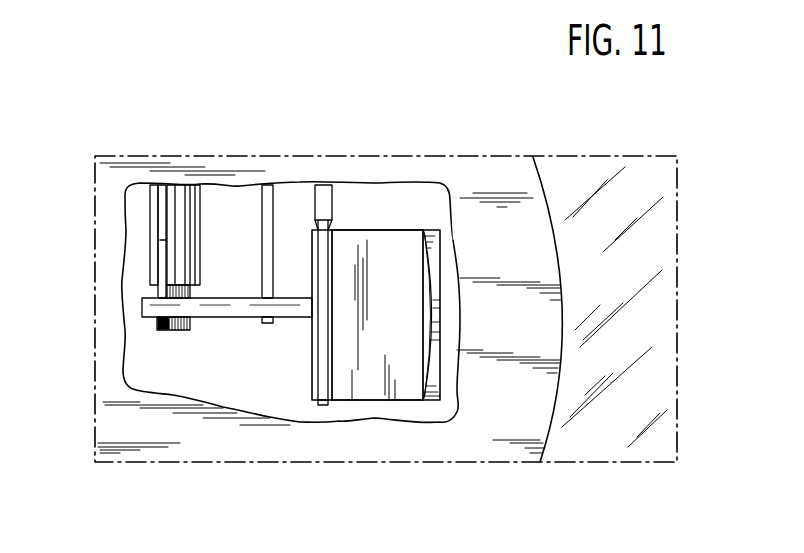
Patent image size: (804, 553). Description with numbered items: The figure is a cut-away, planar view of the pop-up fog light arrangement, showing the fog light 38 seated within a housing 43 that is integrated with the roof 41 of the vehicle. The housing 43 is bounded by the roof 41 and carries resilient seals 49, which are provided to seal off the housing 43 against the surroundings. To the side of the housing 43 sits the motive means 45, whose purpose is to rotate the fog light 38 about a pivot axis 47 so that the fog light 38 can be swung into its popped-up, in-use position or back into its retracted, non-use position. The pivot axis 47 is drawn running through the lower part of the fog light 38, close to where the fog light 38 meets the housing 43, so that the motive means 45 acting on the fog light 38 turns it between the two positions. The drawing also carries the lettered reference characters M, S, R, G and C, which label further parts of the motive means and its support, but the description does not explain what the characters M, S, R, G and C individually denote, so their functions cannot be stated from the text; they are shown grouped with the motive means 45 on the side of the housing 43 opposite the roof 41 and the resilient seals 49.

The fog light 38 is at (388, 238).
The roof 41 is at (507, 187).
The housing 43 is at (414, 320).
The motive means 45 is at (216, 216).
The pivot axis 47 is at (323, 405).
The resilient seals 49 is at (438, 400).
The motor M is at (207, 203).
The support S is at (275, 198).
The rack R is at (233, 327).
The gear G is at (177, 330).
The carriage C is at (317, 370).